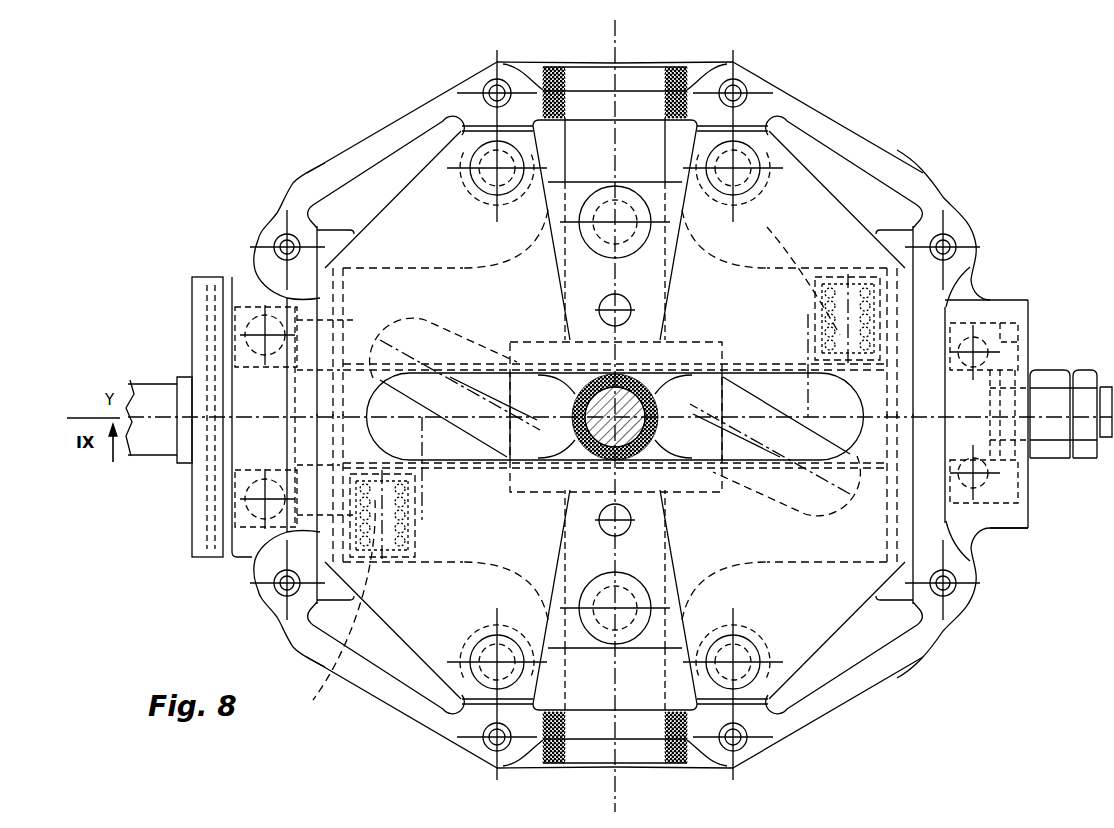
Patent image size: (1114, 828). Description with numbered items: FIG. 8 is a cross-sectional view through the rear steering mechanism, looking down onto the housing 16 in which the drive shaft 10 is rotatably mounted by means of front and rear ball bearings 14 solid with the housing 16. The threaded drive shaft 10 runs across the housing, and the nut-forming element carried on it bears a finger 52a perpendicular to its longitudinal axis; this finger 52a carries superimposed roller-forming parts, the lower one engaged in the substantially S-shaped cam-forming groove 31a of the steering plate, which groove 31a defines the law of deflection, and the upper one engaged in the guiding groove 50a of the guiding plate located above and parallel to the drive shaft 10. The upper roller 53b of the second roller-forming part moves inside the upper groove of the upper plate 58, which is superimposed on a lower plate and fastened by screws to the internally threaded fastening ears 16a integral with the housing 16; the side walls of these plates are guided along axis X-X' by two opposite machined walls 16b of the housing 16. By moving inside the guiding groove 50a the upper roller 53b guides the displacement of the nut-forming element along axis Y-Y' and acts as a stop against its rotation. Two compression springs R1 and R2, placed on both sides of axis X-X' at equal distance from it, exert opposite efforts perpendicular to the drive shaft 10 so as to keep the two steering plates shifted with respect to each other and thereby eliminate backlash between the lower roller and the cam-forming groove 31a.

The drive shaft 10 is at (355, 388).
The ball bearings 14 is at (976, 332).
The housing 16 is at (857, 683).
The fastening ears 16a is at (432, 172).
The guiding walls 16b is at (285, 617).
The cam-forming groove 31a is at (479, 347).
The guiding groove 50a is at (435, 478).
The finger 52a is at (660, 462).
The upper roller 53b is at (700, 354).
The upper plate 58 is at (427, 628).
The compression spring R1 is at (336, 600).
The compression spring R2 is at (803, 272).